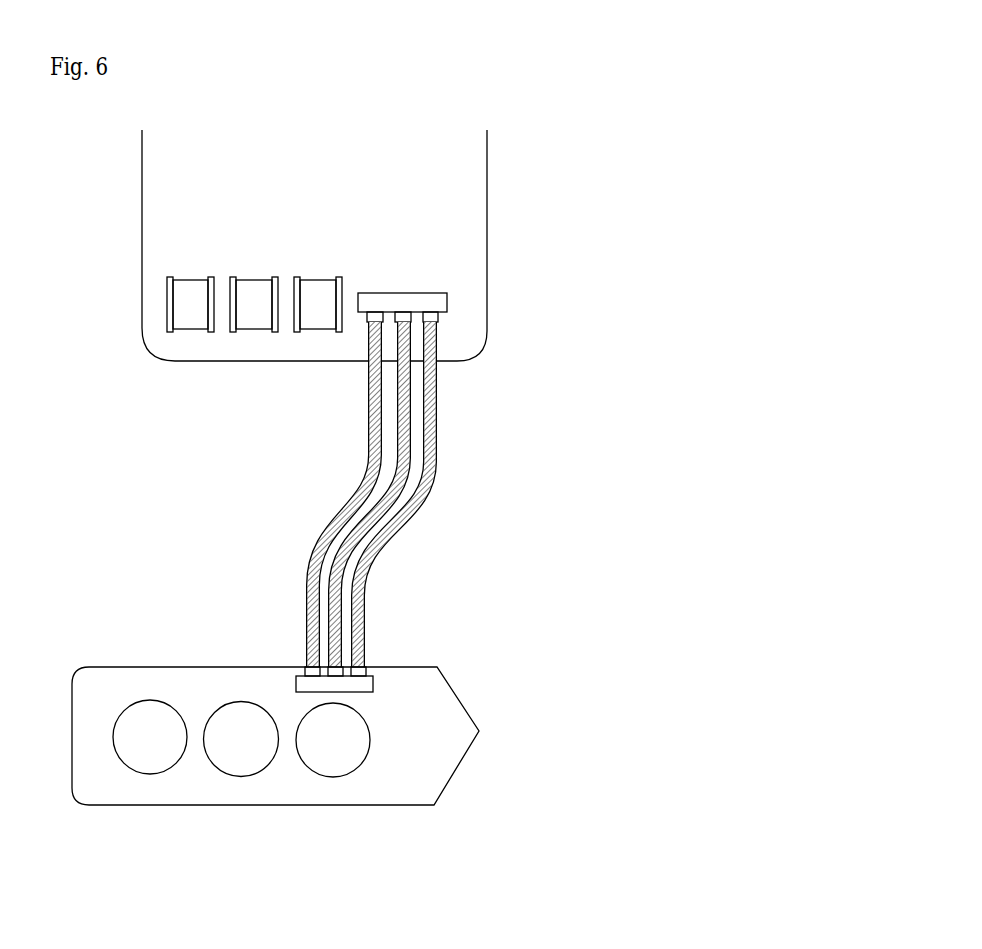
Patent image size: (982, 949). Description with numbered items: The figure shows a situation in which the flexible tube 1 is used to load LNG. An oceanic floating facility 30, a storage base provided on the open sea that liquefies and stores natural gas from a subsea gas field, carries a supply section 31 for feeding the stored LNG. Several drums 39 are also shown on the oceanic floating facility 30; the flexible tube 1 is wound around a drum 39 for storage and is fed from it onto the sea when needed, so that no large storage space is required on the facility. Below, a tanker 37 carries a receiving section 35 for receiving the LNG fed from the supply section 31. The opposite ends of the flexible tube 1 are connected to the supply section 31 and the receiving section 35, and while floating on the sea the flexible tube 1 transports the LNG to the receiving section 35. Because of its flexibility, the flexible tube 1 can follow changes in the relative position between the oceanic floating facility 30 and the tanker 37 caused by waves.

The flexible tube 1 is at (393, 531).
The oceanic floating facility 30 is at (443, 207).
The supply section 31 is at (440, 304).
The receiving section 35 is at (362, 683).
The tanker 37 is at (450, 753).
The drum 39 is at (185, 317).